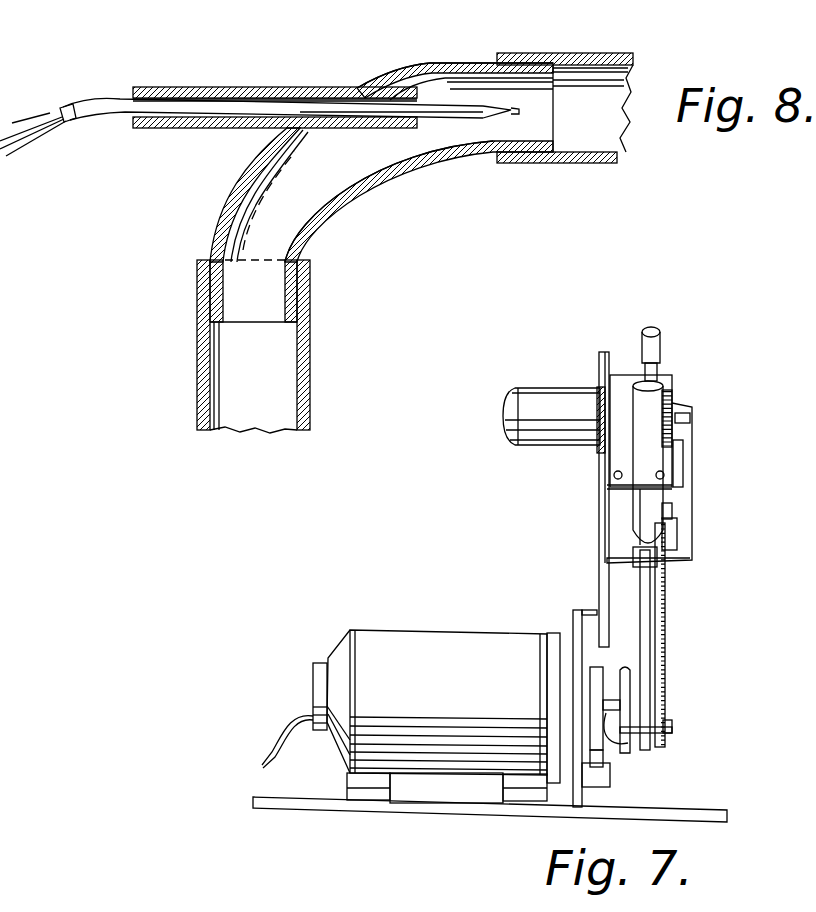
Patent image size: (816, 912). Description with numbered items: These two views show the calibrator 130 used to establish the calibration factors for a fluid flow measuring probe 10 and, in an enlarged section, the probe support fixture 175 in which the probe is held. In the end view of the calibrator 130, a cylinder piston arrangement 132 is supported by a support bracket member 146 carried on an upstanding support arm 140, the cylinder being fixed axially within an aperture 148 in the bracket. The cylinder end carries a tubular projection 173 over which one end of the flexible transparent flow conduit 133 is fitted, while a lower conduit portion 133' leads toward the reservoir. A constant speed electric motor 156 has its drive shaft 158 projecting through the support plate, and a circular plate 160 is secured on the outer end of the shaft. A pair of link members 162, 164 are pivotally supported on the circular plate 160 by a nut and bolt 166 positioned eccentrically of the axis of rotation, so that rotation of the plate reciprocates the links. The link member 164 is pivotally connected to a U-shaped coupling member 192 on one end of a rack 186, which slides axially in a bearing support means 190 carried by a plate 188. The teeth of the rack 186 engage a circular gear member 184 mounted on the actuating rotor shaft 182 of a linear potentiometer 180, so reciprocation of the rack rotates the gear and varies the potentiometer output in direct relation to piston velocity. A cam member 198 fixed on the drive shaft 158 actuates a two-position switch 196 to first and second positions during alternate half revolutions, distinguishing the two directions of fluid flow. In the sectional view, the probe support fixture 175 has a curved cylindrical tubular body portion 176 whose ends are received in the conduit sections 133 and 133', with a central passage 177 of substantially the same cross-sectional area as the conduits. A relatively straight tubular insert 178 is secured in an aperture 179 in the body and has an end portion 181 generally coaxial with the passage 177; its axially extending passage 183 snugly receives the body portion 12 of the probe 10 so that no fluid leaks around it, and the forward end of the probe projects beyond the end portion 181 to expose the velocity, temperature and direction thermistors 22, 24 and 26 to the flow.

In FIG. 8, the fluid flow measuring probe 10 is at (88, 95).
In FIG. 8, the body portion 12 is at (125, 108).
In FIG. 8, the velocity thermistor 22 is at (512, 112).
In FIG. 8, the temperature thermistor 24 is at (452, 113).
In FIG. 8, the direction thermistor 26 is at (494, 117).
In FIG. 7, the calibrator 130 is at (460, 555).
In FIG. 7, the cylinder piston arrangement 132 is at (635, 365).
In FIG. 8, the flow conduit 133 is at (577, 90).
In FIG. 7, the flow conduit 133 is at (611, 336).
In FIG. 8, the lower conduit portion 133' is at (188, 346).
In FIG. 7, the support arm 140 is at (603, 483).
In FIG. 7, the support bracket member 146 is at (650, 487).
In FIG. 7, the aperture 148 is at (600, 435).
In FIG. 7, the constant speed electric motor 156 is at (455, 640).
In FIG. 7, the drive shaft 158 is at (630, 750).
In FIG. 7, the circular plate 160 is at (631, 684).
In FIG. 7, the link member 162 is at (651, 595).
In FIG. 7, the link member 164 is at (666, 624).
In FIG. 7, the nut and bolt 166 is at (673, 726).
In FIG. 7, the tubular projection 173 is at (658, 371).
In FIG. 8, the probe mounting fixture 175 is at (456, 57).
In FIG. 8, the curved cylindrical tubular body portion 176 is at (232, 211).
In FIG. 8, the central passage 177 is at (333, 200).
In FIG. 8, the tubular insert 178 is at (200, 129).
In FIG. 8, the aperture 179 is at (338, 101).
In FIG. 7, the linear potentiometer 180 is at (538, 395).
In FIG. 8, the end portion 181 is at (415, 90).
In FIG. 7, the actuating rotor shaft 182 is at (692, 419).
In FIG. 8, the axially extending passage 183 is at (228, 98).
In FIG. 7, the circular gear member 184 is at (671, 395).
In FIG. 7, the rack 186 is at (666, 510).
In FIG. 7, the plate 188 is at (680, 529).
In FIG. 7, the bearing support means 190 is at (690, 451).
In FIG. 7, the U-shaped coupling member 192 is at (670, 548).
In FIG. 7, the two-position switch 196 is at (610, 772).
In FIG. 7, the cam member 198 is at (585, 668).